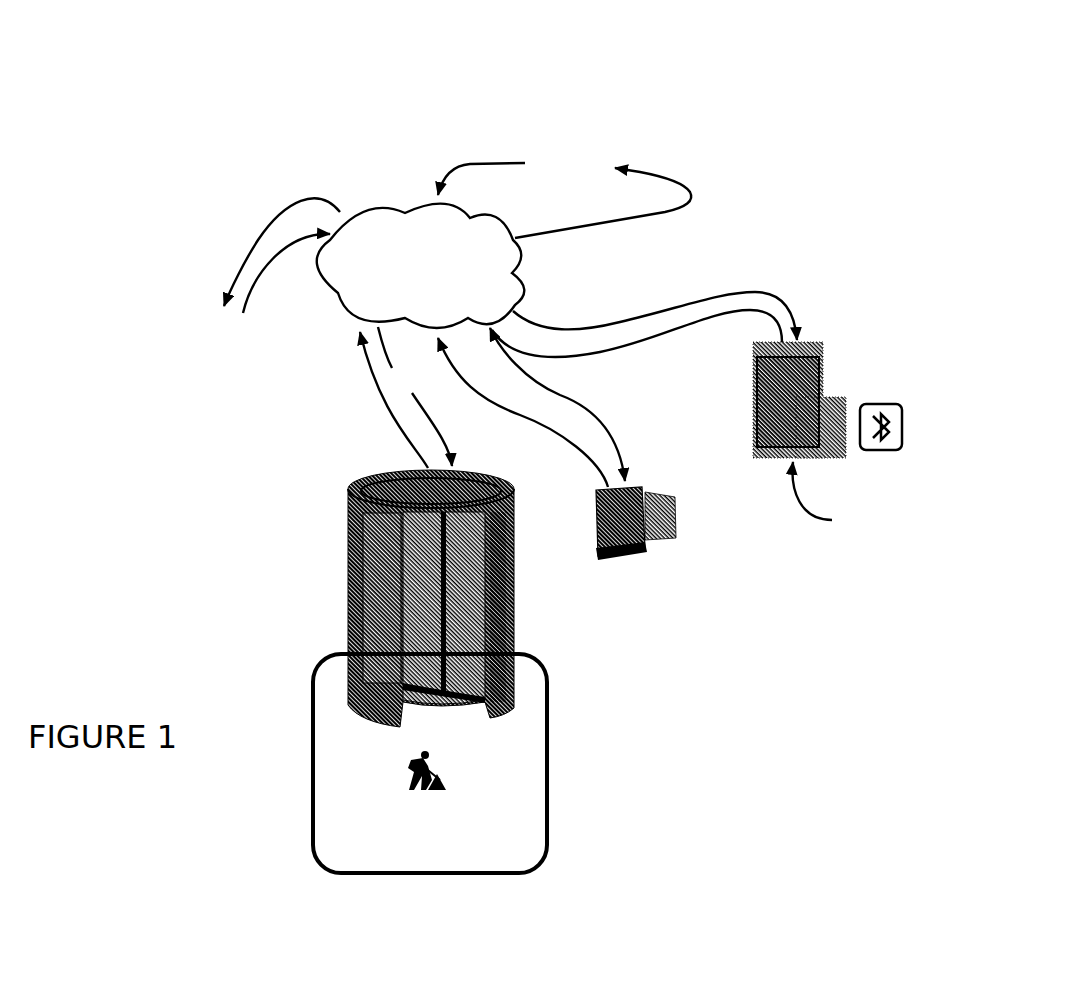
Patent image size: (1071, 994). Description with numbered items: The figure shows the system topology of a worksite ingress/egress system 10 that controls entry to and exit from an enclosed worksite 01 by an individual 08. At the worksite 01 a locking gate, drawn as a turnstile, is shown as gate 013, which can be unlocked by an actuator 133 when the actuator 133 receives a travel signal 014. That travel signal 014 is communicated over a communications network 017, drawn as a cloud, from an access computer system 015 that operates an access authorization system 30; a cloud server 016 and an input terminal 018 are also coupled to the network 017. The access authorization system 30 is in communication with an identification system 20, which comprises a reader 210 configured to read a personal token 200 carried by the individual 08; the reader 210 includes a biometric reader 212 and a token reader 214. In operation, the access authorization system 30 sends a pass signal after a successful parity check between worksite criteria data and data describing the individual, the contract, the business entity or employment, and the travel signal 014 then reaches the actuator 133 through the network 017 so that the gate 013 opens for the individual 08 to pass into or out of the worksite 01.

The worksite ingress/egress system 10 is at (342, 120).
The access authorization system 30 is at (484, 75).
The remote server 015 is at (578, 54).
The database 016 is at (632, 118).
The cloud network 017 is at (421, 266).
The communication link 018 is at (228, 292).
The wireless communication link 014 is at (578, 389).
The actuator 133 is at (400, 464).
The sensor unit 013 is at (432, 604).
The reader 210 is at (592, 515).
The token reader 214 is at (650, 553).
The biometric reader 212 is at (623, 560).
The personal token 200 is at (680, 512).
The identification system 20 is at (713, 563).
The worksite 01 is at (514, 812).
The individual 08 is at (400, 772).